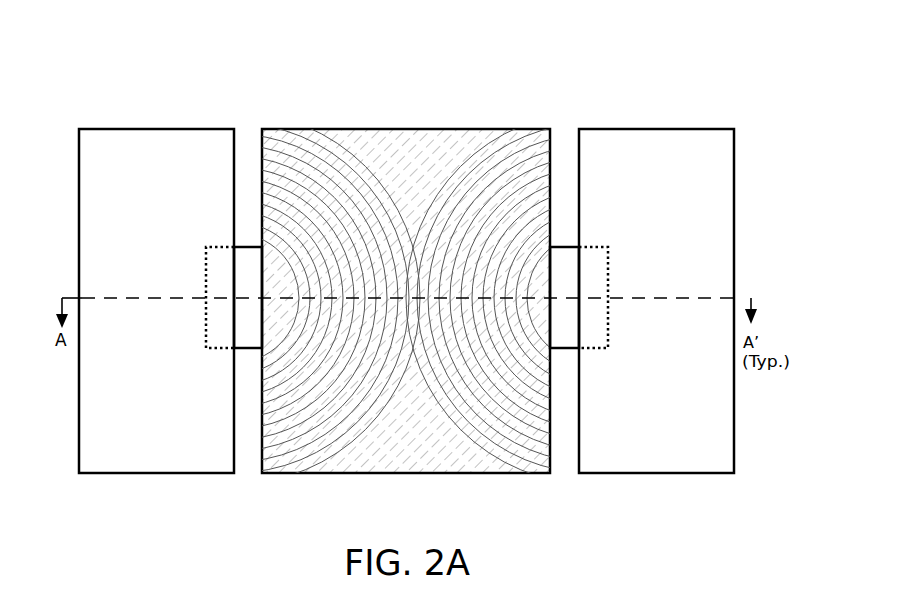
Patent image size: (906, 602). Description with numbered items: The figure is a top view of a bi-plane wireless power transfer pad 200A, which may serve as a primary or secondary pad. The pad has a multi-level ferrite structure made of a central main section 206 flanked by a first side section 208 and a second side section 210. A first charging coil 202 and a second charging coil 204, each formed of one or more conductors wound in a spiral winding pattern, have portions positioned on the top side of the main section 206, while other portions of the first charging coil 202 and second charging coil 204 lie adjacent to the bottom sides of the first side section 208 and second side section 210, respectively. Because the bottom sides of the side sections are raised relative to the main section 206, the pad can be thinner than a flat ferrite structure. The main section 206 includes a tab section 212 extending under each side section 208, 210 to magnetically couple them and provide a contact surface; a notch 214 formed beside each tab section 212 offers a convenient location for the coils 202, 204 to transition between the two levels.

The bi-plane wireless power transfer pad 200A is at (106, 106).
The first charging coil 202 is at (337, 433).
The second charging coil 204 is at (482, 432).
The main section 206 is at (528, 473).
The first side section 208 is at (142, 473).
The second side section 210 is at (680, 473).
The tab section 212 is at (247, 312).
The notch 214 is at (242, 465).